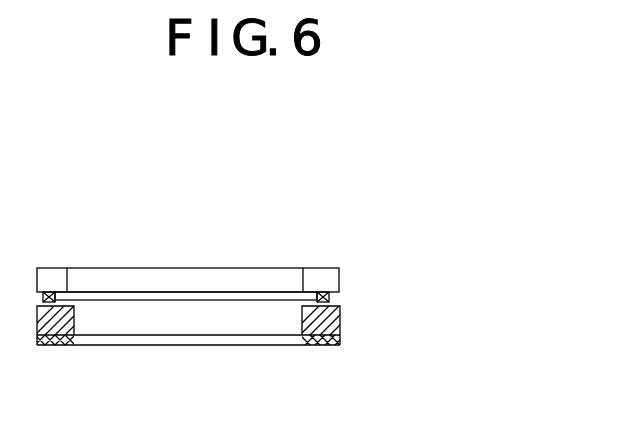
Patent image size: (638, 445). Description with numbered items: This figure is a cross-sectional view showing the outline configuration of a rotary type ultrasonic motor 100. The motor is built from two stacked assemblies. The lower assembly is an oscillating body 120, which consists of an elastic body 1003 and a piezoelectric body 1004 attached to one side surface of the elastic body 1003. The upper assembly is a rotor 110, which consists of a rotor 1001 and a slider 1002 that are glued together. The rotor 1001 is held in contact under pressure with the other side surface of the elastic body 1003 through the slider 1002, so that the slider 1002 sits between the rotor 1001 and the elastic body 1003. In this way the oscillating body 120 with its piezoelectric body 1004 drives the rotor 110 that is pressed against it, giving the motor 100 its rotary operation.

The liquid crystal display device 100 is at (173, 250).
The rotor 110 is at (513, 207).
The oscillating body 120 is at (513, 317).
The rotor 1001 is at (325, 268).
The slider 1002 is at (331, 299).
The elastic body 1003 is at (341, 322).
The piezoelectric body 1004 is at (324, 345).